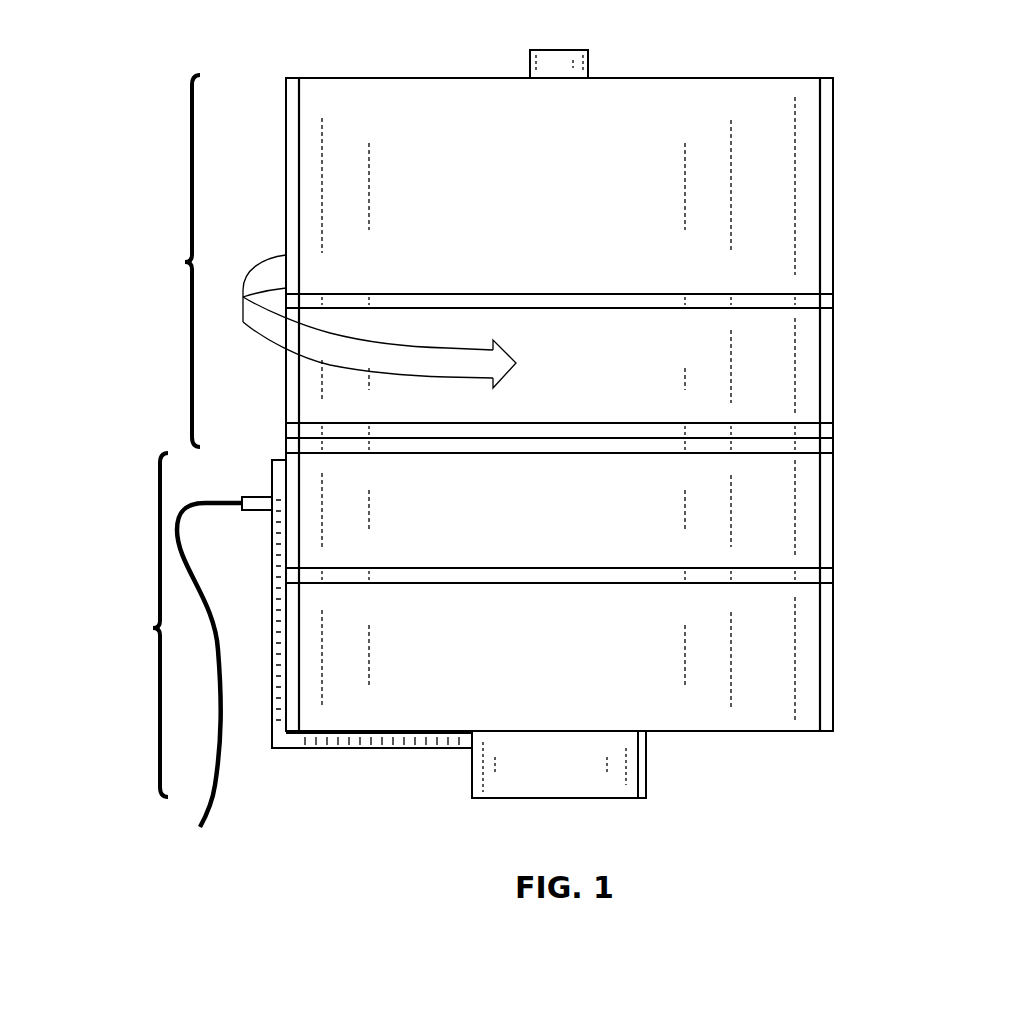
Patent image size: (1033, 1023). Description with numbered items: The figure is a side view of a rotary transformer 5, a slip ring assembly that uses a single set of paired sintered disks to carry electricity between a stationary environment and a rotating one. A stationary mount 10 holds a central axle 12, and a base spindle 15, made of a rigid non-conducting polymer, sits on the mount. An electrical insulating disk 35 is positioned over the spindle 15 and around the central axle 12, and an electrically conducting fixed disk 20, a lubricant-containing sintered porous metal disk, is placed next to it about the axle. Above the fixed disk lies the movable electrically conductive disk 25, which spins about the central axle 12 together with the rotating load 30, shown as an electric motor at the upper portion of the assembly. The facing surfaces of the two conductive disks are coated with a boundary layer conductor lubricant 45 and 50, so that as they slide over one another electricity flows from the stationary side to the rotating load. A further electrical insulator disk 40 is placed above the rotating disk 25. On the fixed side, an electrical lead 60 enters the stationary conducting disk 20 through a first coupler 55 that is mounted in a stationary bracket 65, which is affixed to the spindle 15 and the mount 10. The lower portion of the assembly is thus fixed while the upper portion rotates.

The rotary transformer 5 is at (118, 88).
The fixed mount 10 is at (646, 770).
The central axle 12 is at (588, 50).
The base spindle 15 is at (703, 734).
The electrically conducting fixed disk 20 is at (833, 512).
The movable electrically conductive disk 25 is at (833, 368).
The load 30 is at (833, 186).
The electrical insulating disk 35 is at (833, 575).
The electrical insulator disk 40 is at (833, 302).
The BLC/lubricant 45 is at (833, 446).
The BLC/lubricant 50 is at (833, 431).
The first coupler 55 is at (257, 496).
The electrical lead 60 is at (205, 812).
The stationary bracket 65 is at (305, 749).